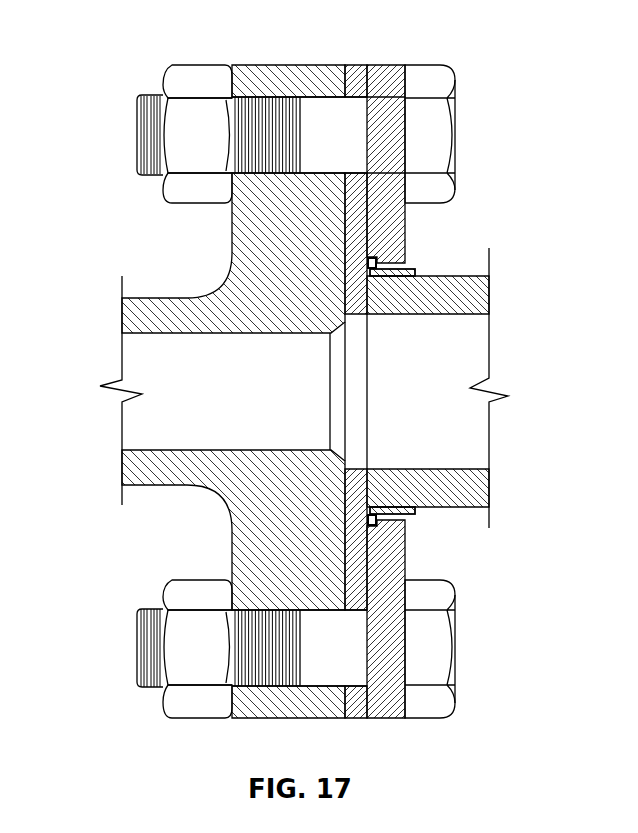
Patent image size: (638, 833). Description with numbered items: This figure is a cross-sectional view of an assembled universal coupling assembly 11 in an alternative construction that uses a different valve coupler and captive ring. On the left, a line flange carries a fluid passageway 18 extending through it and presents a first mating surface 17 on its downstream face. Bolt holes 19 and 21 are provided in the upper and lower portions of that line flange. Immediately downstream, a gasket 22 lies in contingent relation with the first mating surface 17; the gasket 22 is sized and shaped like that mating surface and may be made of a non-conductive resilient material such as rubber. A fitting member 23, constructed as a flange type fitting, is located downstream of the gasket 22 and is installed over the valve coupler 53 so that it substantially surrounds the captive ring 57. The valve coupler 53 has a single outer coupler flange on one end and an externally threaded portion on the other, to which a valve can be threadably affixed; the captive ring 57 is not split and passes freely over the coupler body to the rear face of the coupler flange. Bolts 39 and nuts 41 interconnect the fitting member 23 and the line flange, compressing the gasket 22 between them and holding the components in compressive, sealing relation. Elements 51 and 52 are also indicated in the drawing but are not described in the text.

The universal coupling assembly 11 is at (108, 194).
The first mating surface 17 is at (345, 80).
The fluid passageway 18 is at (190, 336).
The bolt hole 19 is at (290, 92).
The bolt hole 21 is at (282, 695).
The gasket 22 is at (363, 190).
The fitting member 23 is at (383, 60).
The bolt 39 is at (428, 65).
The nut 41 is at (185, 205).
The second pipe 51 is at (418, 272).
The step 52 is at (372, 258).
The valve coupler 53 is at (495, 483).
The captive ring 57 is at (412, 257).